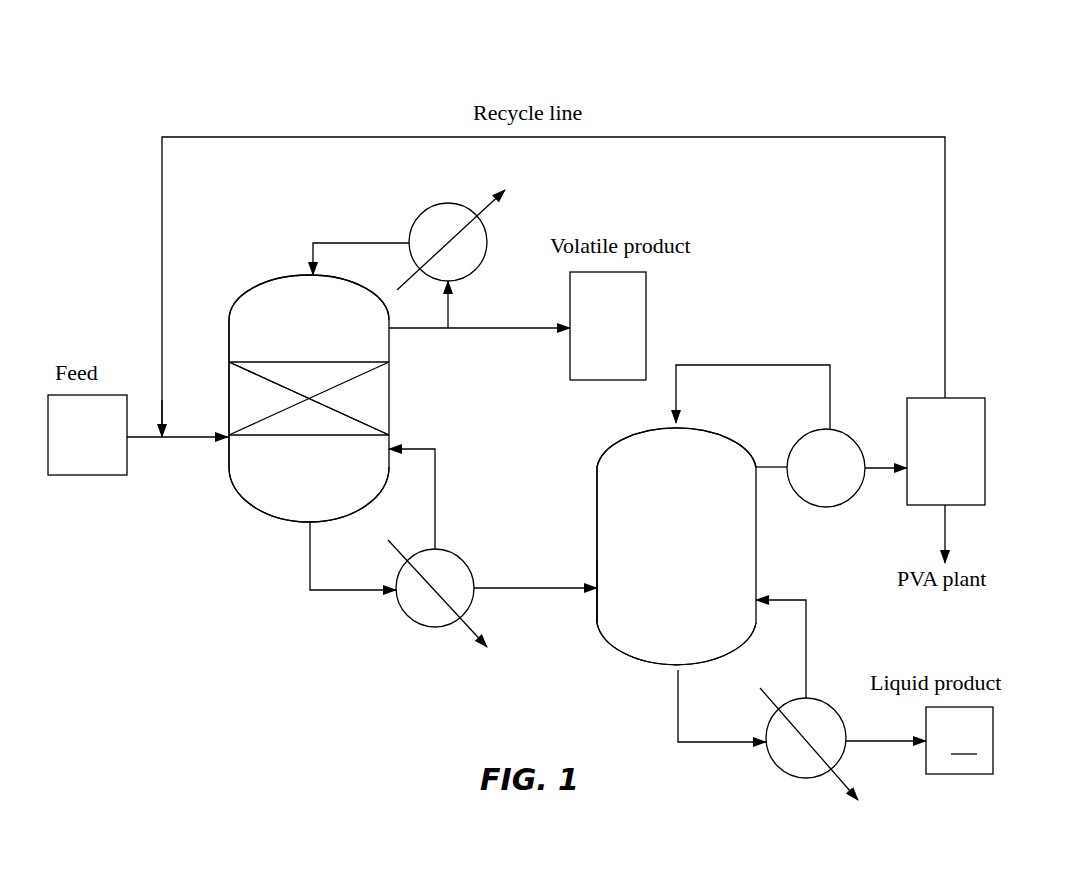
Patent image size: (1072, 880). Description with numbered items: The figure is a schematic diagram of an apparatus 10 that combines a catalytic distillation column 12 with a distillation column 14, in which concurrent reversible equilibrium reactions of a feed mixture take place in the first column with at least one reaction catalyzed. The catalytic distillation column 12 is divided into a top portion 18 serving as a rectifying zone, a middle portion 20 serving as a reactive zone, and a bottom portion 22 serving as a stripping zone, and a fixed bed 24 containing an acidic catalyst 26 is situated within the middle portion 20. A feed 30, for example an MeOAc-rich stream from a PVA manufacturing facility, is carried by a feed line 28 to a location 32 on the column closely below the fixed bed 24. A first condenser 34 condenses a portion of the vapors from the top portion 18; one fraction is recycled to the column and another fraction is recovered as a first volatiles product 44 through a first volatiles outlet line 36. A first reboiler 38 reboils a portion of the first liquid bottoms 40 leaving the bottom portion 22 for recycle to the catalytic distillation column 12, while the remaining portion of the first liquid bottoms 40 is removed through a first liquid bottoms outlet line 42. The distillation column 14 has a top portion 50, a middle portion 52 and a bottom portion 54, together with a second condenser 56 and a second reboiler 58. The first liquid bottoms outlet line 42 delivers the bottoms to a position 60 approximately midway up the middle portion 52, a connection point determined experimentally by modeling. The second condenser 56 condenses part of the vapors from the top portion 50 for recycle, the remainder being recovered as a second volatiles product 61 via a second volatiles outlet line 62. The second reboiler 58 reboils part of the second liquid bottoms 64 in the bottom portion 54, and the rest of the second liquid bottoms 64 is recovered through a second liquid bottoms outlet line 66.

The apparatus 10 is at (722, 120).
The catalytic distillation column 12 is at (263, 258).
The distillation column 14 is at (570, 651).
The top portion 18 is at (253, 307).
The middle portion 20 is at (227, 382).
The bottom portion 22 is at (257, 493).
The fixed bed 24 is at (333, 373).
The acidic catalyst 26 is at (363, 405).
The feed line 28 is at (145, 440).
The feed 30 is at (98, 450).
The location 32 is at (226, 440).
The first condenser 34 is at (418, 217).
The first volatiles outlet line 36 is at (498, 328).
The first reboiler 38 is at (421, 618).
The first liquid bottoms 40 is at (287, 510).
The first liquid bottoms outlet line 42 is at (517, 588).
The first volatiles product 44 is at (619, 341).
The top portion 50 is at (615, 455).
The middle portion 52 is at (645, 574).
The bottom portion 54 is at (647, 650).
The second condenser 56 is at (825, 507).
The second reboiler 58 is at (788, 775).
The position 60 is at (597, 588).
The second volatiles product 61 is at (958, 466).
The second volatiles outlet line 62 is at (873, 462).
The second liquid bottoms 64 is at (668, 665).
The second liquid bottoms outlet line 66 is at (870, 745).